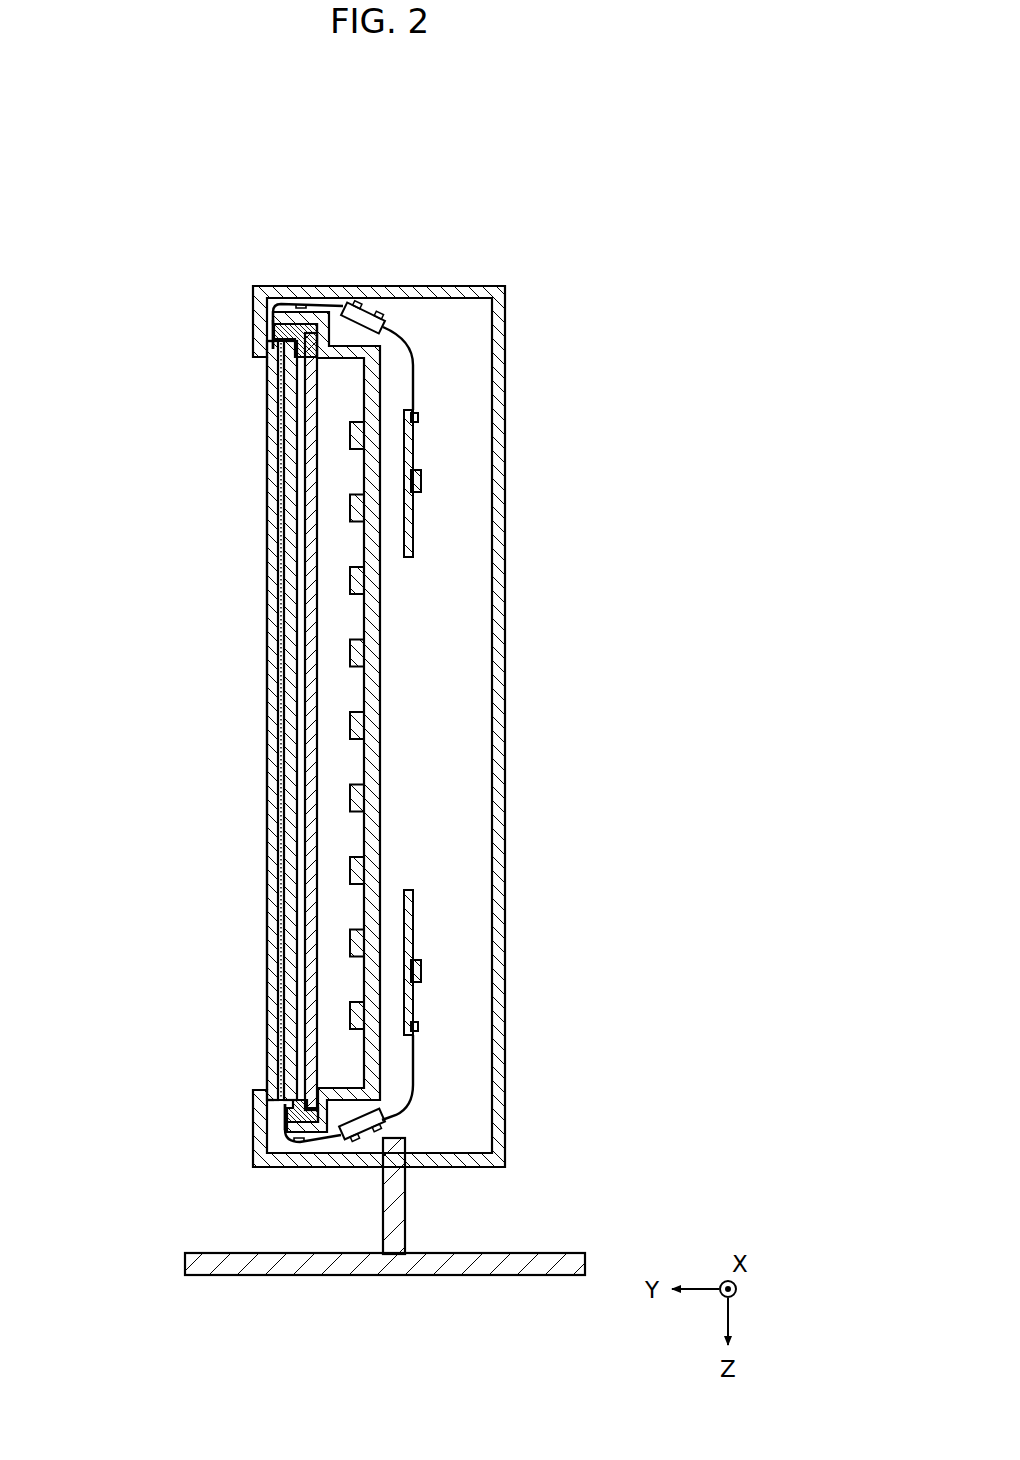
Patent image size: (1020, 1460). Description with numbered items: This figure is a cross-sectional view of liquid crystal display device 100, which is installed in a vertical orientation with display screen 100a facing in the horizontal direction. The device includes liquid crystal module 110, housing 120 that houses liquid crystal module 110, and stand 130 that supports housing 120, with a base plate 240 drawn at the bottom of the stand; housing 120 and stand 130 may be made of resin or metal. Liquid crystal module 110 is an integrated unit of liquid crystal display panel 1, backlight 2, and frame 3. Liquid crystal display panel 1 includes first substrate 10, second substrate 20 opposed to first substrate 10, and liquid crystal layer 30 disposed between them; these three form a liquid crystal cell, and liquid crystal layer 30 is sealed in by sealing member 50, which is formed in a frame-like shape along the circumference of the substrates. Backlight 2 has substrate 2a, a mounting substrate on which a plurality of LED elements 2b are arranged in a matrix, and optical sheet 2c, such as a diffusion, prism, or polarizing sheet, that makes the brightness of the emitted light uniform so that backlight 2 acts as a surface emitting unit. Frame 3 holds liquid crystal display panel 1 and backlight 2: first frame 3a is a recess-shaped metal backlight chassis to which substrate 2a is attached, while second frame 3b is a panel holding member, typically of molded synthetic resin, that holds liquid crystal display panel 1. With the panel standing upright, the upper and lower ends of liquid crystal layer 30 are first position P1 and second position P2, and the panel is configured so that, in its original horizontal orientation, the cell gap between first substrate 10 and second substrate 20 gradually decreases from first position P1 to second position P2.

The liquid crystal display device 100 is at (557, 207).
The display screen 100a is at (263, 693).
The liquid crystal module 110 is at (122, 793).
The housing 120 is at (255, 1156).
The stand 130 is at (267, 1252).
The base plate 240 is at (545, 1252).
The liquid crystal display panel 1 is at (168, 760).
The first substrate 10 is at (267, 773).
The second substrate 20 is at (268, 805).
The liquid crystal layer 30 is at (273, 840).
The backlight 2 is at (168, 872).
The substrate 2a is at (365, 905).
The LED elements 2b is at (352, 943).
The optical sheet 2c is at (310, 960).
The frame 3 is at (168, 1000).
The first frame 3a is at (390, 1033).
The second frame 3b is at (273, 343).
The sealing member 50 is at (272, 348).
The first position P1 is at (270, 360).
The second position P2 is at (273, 1085).